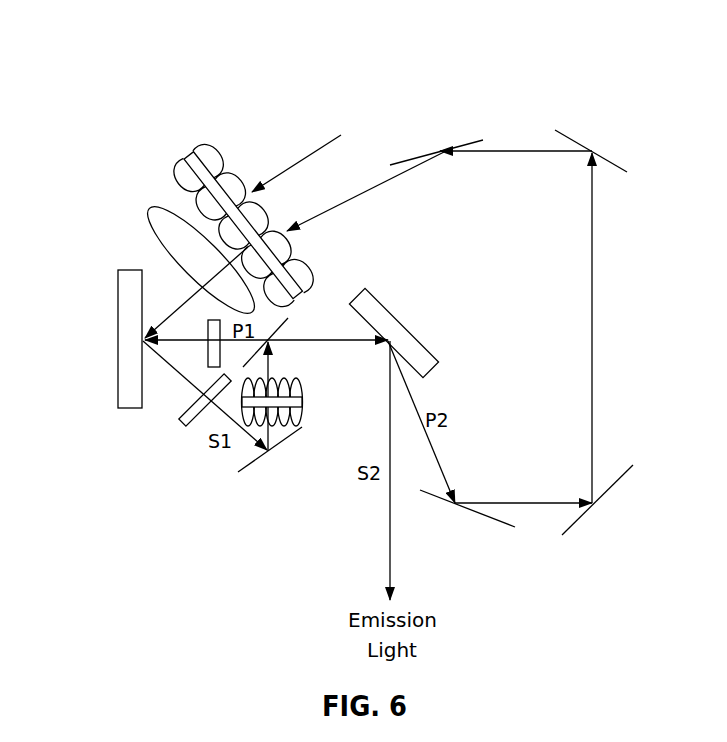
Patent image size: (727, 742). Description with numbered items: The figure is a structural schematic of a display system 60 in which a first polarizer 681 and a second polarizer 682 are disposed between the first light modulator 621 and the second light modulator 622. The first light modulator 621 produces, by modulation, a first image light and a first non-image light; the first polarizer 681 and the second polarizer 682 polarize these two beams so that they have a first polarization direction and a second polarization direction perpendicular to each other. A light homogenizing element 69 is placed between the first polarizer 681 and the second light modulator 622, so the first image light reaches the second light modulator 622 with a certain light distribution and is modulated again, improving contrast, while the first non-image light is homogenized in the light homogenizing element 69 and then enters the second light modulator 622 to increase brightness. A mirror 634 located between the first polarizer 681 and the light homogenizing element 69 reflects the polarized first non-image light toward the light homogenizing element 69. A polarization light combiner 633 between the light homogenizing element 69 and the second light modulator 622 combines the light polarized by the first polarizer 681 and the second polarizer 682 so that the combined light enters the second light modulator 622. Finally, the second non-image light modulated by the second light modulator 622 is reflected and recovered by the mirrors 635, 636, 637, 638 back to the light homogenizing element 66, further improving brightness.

The display system 60 is at (377, 48).
The light homogenizing element 66 is at (186, 172).
The first light modulator 621 is at (140, 294).
The second light modulator 622 is at (375, 298).
The polarization light combiner 633 is at (288, 319).
The mirror 634 is at (241, 468).
The mirror 635 is at (497, 518).
The mirror 636 is at (614, 483).
The mirror 637 is at (570, 141).
The mirror 638 is at (397, 162).
The first polarizer 681 is at (183, 426).
The second polarizer 682 is at (208, 355).
The light homogenizing element 69 is at (302, 388).